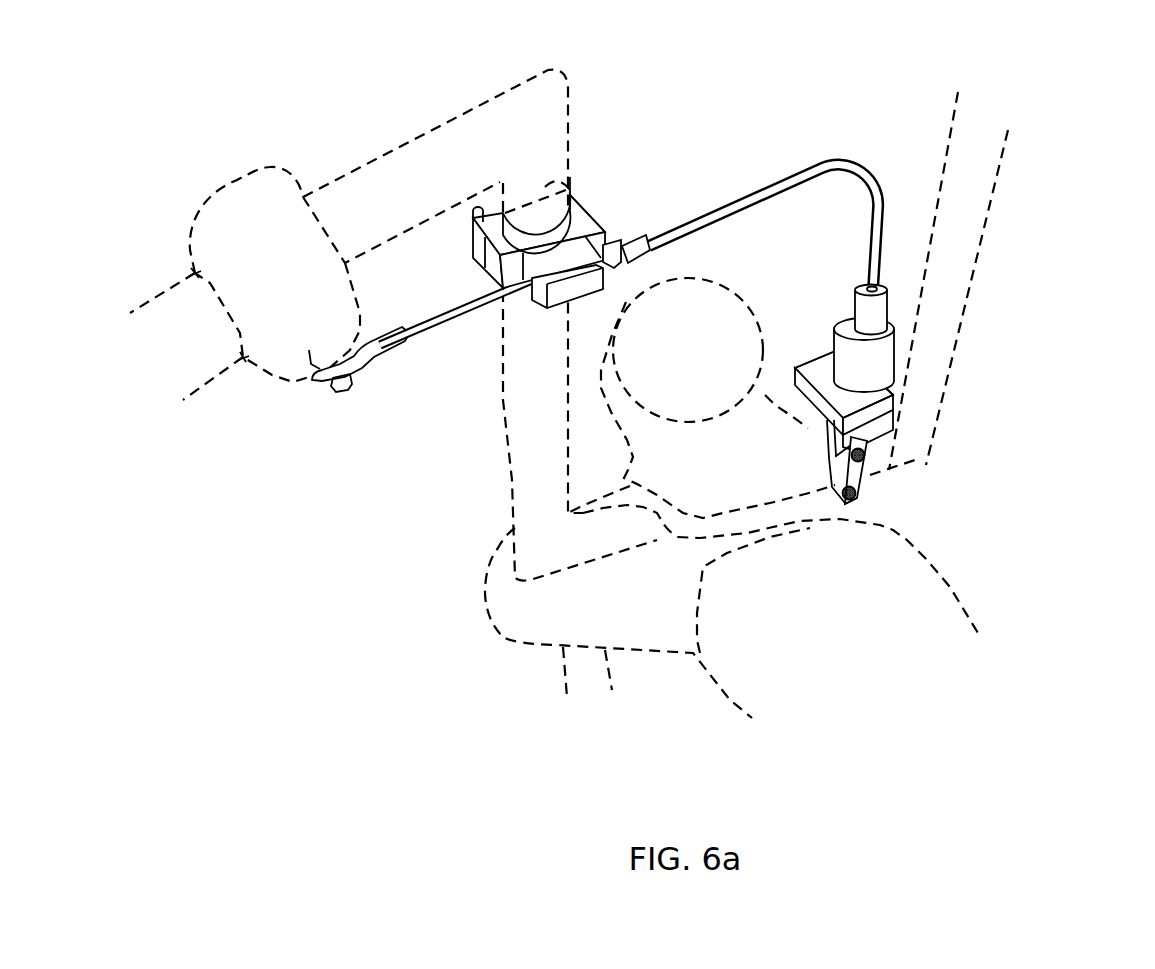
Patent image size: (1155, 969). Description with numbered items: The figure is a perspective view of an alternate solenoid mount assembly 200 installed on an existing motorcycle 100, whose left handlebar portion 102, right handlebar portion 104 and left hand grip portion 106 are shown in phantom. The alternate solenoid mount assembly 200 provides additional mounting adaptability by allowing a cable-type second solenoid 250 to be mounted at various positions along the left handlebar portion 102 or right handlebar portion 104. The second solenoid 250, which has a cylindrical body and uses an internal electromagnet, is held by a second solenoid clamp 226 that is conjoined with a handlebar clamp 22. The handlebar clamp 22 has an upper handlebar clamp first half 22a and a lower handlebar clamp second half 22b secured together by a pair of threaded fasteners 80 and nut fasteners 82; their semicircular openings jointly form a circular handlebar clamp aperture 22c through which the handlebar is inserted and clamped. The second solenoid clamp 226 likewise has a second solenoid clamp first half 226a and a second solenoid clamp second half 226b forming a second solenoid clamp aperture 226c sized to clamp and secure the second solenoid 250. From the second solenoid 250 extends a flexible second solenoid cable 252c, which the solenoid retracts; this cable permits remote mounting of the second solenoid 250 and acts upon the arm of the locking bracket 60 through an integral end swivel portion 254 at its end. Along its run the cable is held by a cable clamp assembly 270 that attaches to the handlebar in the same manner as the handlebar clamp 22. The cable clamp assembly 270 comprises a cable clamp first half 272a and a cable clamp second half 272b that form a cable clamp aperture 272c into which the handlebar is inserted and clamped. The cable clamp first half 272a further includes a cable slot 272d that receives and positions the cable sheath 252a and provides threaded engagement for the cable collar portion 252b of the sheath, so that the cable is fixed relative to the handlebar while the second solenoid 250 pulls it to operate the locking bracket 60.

The handlebar clamp 22 is at (948, 514).
The handlebar clamp first half 22a is at (870, 478).
The handlebar clamp second half 22b is at (893, 430).
The handlebar clamp aperture 22c is at (860, 473).
The locking bracket 60 is at (320, 330).
The threaded fasteners 80 is at (573, 193).
The nut fasteners 82 is at (333, 388).
The motorcycle 100 is at (533, 656).
The left handlebar portion 102 is at (417, 138).
The right handlebar portion 104 is at (993, 197).
The left hand grip portion 106 is at (270, 372).
The alternate solenoid mount assembly 200 is at (383, 508).
The second solenoid clamp 226 is at (867, 381).
The second solenoid clamp first half 226a is at (813, 377).
The second solenoid clamp second half 226b is at (840, 402).
The second solenoid clamp aperture 226c is at (880, 391).
The second solenoid 250 is at (880, 376).
The cable sheath 252a is at (793, 180).
The cable collar portion 252b is at (650, 253).
The second solenoid cable 252c is at (448, 323).
The end swivel portion 254 is at (373, 367).
The cable clamp assembly 270 is at (594, 233).
The cable clamp first half 272a is at (573, 197).
The cable clamp second half 272b is at (587, 230).
The cable clamp aperture 272c is at (540, 237).
The cable slot 272d is at (567, 293).